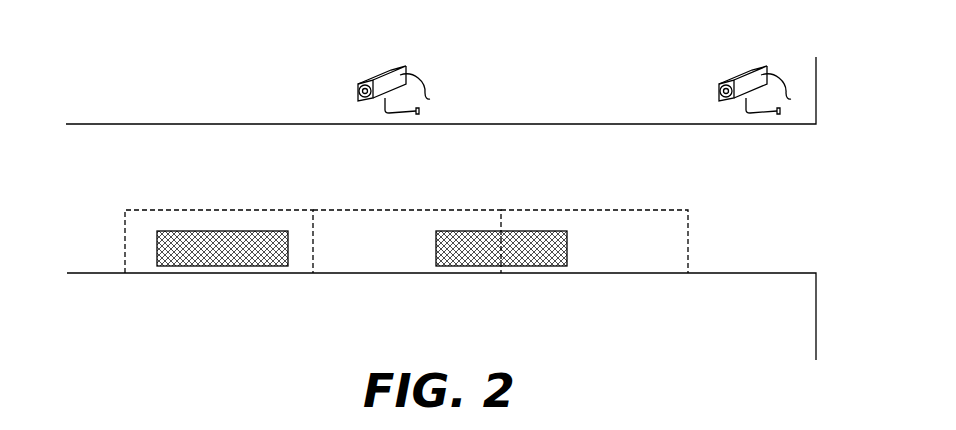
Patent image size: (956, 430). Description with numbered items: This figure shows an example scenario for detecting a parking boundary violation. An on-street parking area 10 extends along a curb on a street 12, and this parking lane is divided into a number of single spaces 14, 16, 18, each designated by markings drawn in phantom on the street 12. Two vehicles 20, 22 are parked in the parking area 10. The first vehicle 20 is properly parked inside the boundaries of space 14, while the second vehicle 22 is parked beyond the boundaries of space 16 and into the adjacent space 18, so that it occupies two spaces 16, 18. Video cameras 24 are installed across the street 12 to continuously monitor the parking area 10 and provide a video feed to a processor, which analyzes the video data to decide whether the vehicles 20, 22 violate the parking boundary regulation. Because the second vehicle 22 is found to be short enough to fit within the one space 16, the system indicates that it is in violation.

The on-street parking area 10 is at (707, 237).
The street 12 is at (737, 170).
The single space 14 is at (303, 253).
The single space 16 is at (327, 253).
The adjacent space 18 is at (623, 254).
The first vehicle 20 is at (222, 266).
The second vehicle 22 is at (472, 266).
The video camera 24 is at (395, 66).